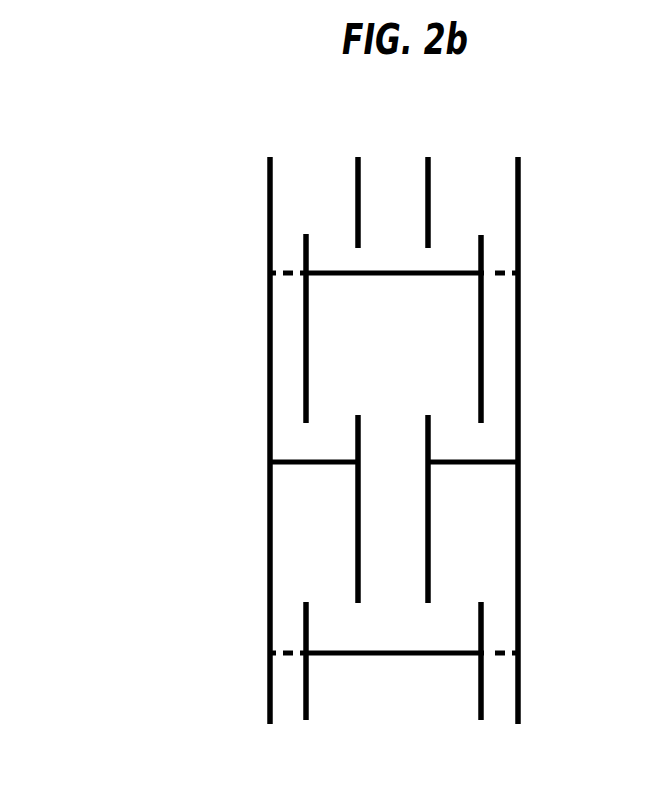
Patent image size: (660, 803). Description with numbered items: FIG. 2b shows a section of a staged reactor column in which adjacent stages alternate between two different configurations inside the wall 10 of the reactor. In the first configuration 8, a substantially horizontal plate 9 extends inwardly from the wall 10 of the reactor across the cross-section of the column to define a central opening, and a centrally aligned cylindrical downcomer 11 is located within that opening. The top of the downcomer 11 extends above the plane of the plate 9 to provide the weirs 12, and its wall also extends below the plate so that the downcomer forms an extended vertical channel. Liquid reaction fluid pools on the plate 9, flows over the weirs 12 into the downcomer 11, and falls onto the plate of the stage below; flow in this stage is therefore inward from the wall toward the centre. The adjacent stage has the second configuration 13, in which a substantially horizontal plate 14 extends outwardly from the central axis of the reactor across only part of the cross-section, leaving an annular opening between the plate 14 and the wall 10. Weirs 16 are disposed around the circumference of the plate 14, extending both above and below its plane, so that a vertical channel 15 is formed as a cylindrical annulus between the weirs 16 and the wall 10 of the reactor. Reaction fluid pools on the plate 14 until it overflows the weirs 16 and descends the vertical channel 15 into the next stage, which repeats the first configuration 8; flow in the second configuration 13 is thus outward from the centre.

The first configuration 8 is at (547, 412).
The substantially horizontal plate 9 is at (480, 460).
The wall of the reactor 10 is at (520, 331).
The cylindrical downcomer 11 is at (370, 554).
The weirs 12 is at (357, 441).
The second configuration 13 is at (240, 237).
The substantially horizontal plate 14 is at (342, 272).
The vertical channel 15 is at (492, 270).
The weirs 16 is at (481, 236).